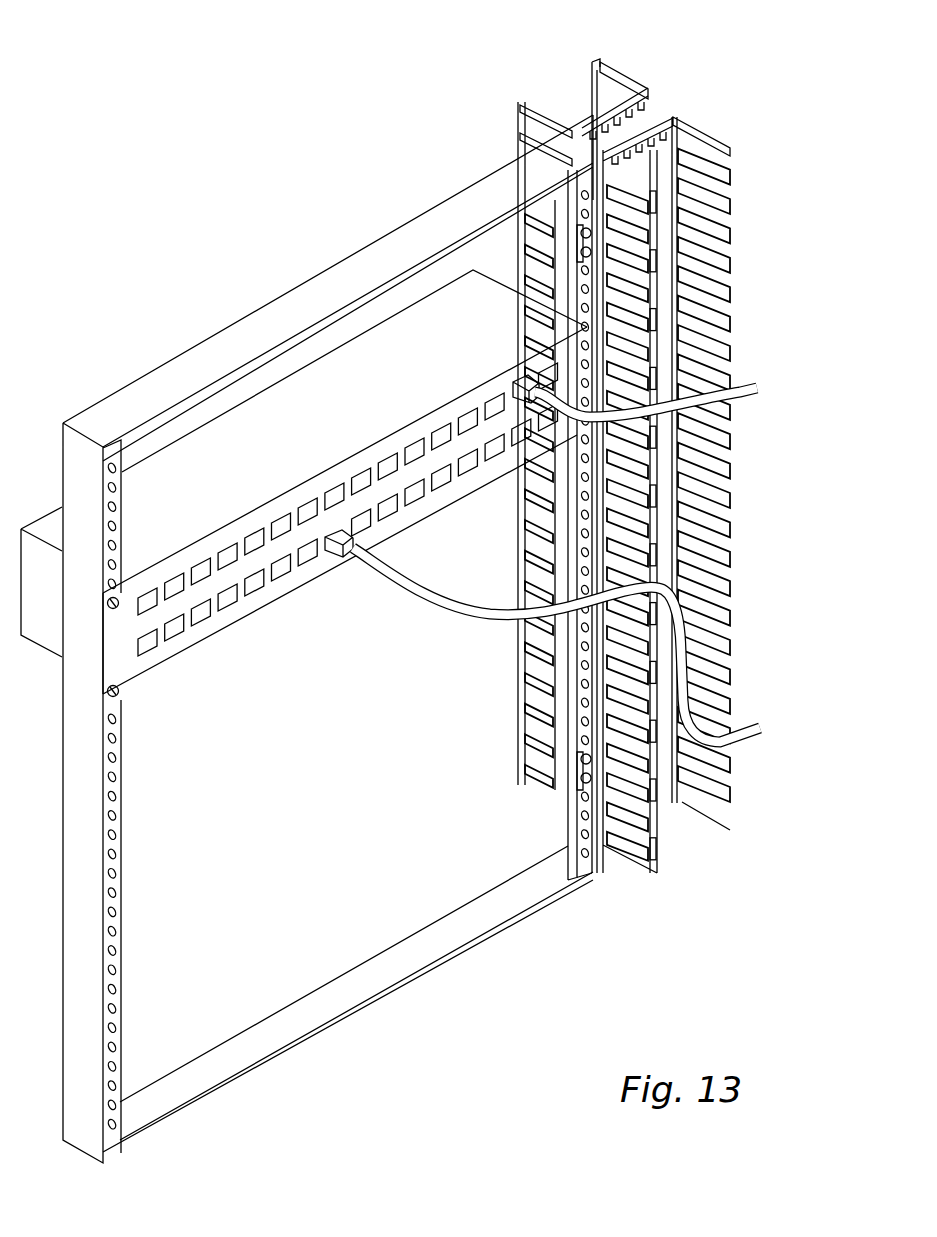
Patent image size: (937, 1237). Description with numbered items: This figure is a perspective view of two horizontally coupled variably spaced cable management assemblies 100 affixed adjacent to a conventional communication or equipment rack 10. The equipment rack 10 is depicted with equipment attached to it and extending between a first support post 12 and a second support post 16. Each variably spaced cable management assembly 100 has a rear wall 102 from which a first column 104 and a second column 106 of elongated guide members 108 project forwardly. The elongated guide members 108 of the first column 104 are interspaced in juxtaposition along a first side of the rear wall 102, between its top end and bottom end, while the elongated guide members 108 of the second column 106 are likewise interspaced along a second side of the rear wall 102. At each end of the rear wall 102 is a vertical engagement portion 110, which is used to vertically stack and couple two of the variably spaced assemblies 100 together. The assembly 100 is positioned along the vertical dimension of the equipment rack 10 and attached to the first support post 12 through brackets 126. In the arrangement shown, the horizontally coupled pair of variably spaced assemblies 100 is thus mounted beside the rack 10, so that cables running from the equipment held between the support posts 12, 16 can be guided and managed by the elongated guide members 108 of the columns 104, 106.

The equipment rack 10 is at (362, 188).
The support post 12 is at (124, 792).
The second support post 16 is at (575, 848).
The variably spaced cable management assembly 100 is at (606, 483).
The rear wall 102 is at (645, 112).
The first column 104 is at (620, 56).
The second column 106 is at (531, 100).
The elongated guide member 108 is at (722, 152).
The vertical engagement portion 110 is at (657, 77).
The bracket 126 is at (578, 250).